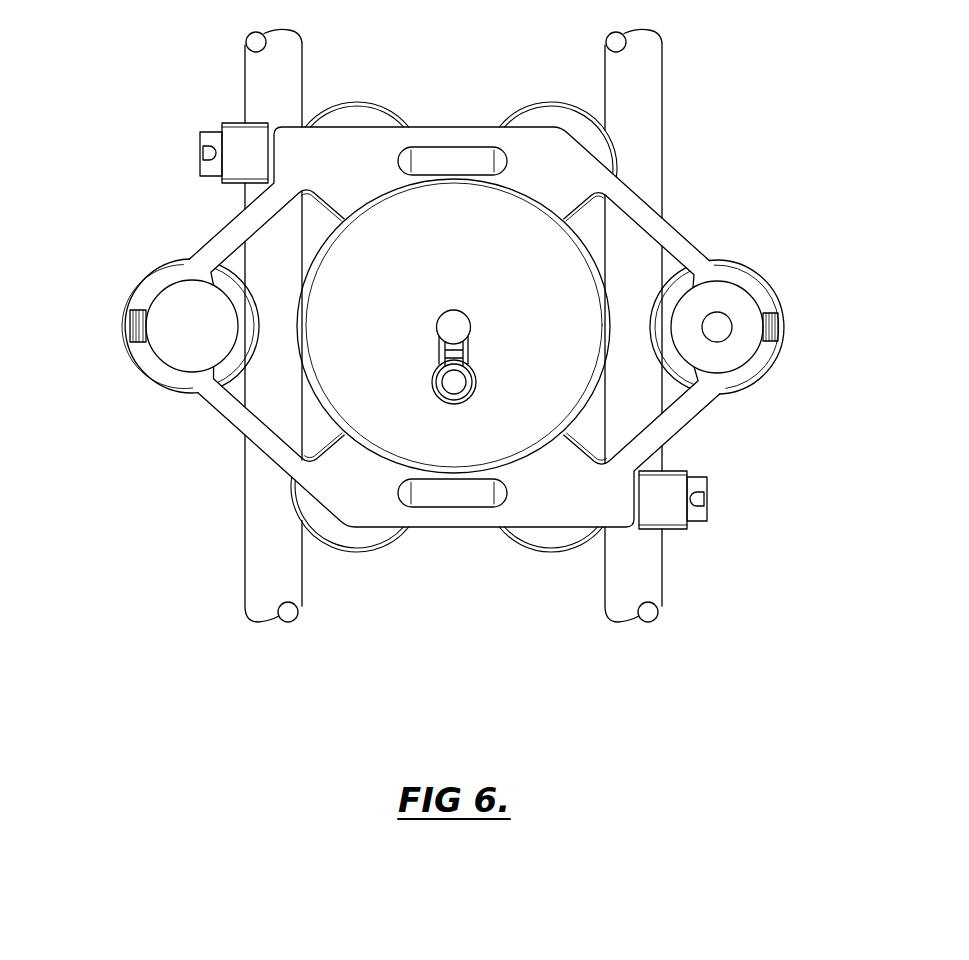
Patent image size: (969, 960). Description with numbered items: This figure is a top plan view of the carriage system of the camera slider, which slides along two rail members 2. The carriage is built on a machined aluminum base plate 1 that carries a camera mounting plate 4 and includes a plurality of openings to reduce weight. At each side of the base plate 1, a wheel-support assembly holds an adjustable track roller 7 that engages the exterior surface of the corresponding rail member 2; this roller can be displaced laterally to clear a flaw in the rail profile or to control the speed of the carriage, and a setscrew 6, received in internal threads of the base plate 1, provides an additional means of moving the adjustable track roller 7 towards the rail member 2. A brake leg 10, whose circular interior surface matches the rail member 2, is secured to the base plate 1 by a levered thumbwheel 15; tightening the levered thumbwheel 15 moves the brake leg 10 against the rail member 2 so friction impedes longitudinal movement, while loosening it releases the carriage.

The base plate 1 is at (461, 537).
The rail member 2 is at (670, 66).
The camera mounting plate 4 is at (459, 193).
The setscrew 6 is at (786, 327).
The adjustable track roller 7 is at (133, 362).
The brake leg 10 is at (714, 508).
The levered thumbwheel 15 is at (705, 499).